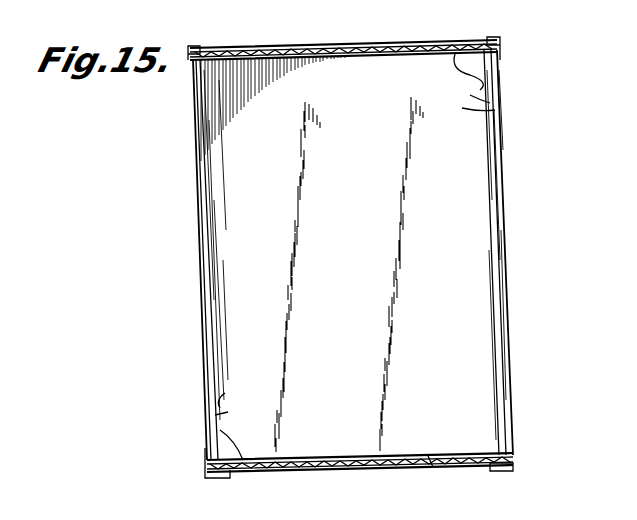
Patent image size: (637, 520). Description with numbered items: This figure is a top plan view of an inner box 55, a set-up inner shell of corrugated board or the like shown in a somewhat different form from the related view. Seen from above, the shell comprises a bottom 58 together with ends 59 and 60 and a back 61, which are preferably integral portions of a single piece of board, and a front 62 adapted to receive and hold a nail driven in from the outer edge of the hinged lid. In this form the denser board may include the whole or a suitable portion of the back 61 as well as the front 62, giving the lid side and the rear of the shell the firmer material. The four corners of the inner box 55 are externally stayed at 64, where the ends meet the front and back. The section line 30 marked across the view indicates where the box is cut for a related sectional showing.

The section line 30 is at (258, 290).
The inner box 55 is at (495, 110).
The bottom 58 is at (430, 456).
The end 59 is at (346, 470).
The end 60 is at (344, 46).
The back 61 is at (204, 323).
The front 62 is at (501, 327).
The corner stay 64 is at (193, 62).